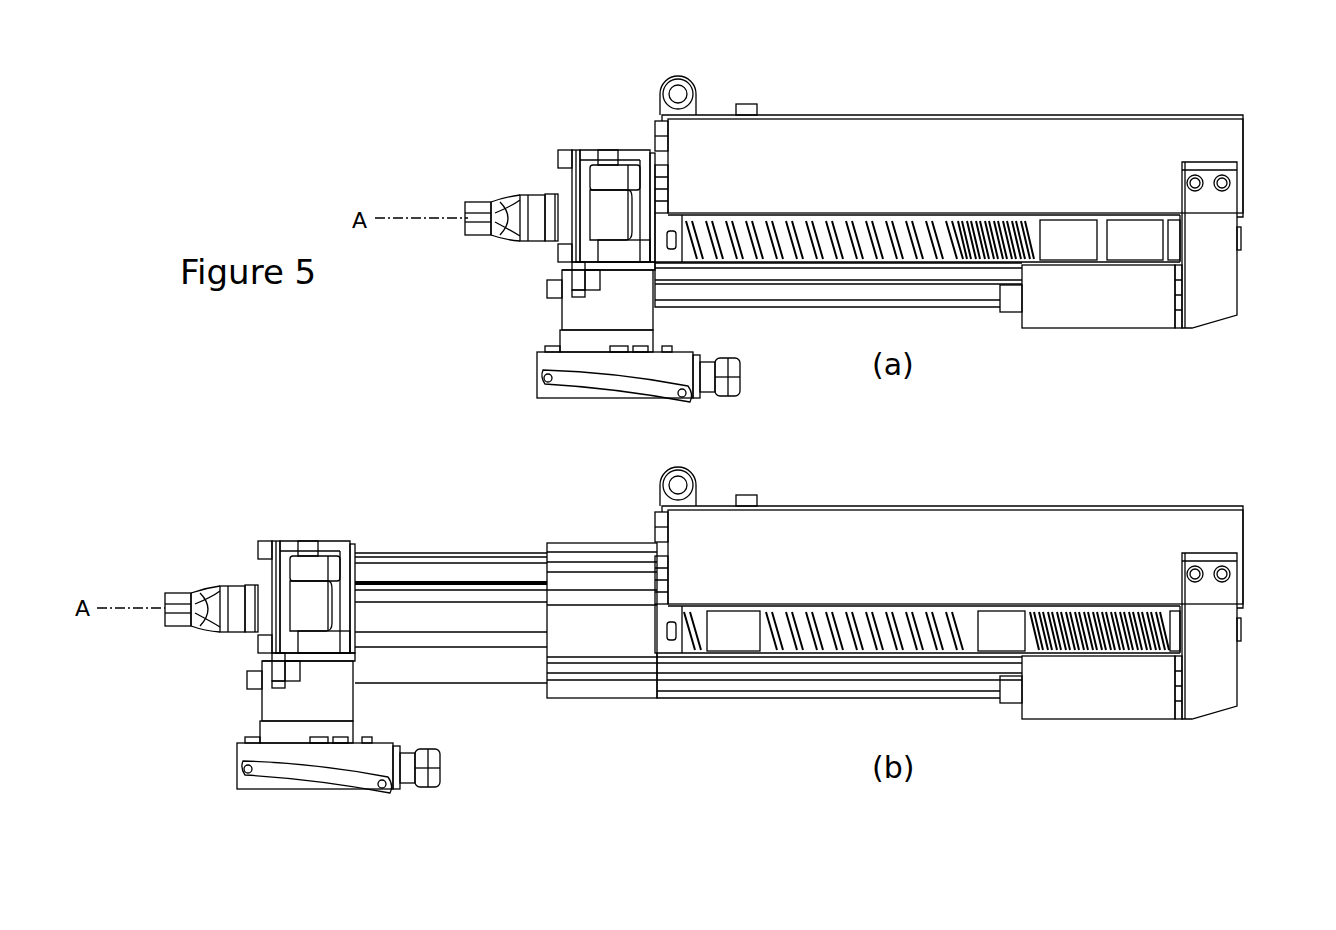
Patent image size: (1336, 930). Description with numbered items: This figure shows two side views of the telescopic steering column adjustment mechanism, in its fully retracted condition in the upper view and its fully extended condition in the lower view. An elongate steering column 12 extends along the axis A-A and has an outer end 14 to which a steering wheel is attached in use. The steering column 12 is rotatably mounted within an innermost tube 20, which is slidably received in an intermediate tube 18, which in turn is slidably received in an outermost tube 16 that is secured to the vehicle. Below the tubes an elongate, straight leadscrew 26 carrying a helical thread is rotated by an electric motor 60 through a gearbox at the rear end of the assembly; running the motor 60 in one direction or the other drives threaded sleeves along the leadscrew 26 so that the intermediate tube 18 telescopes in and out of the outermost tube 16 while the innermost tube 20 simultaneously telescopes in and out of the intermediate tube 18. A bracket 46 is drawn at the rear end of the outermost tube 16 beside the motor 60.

The elongate steering column 12 is at (528, 193).
The outer end 14 is at (484, 200).
The outermost elongate housing portion 16 is at (978, 115).
The intermediate elongate housing portion 18 is at (600, 545).
The innermost elongate housing portion 20 is at (420, 545).
The leadscrew 26 is at (856, 236).
The end bracket 46 is at (1212, 237).
The electric motor 60 is at (1083, 293).